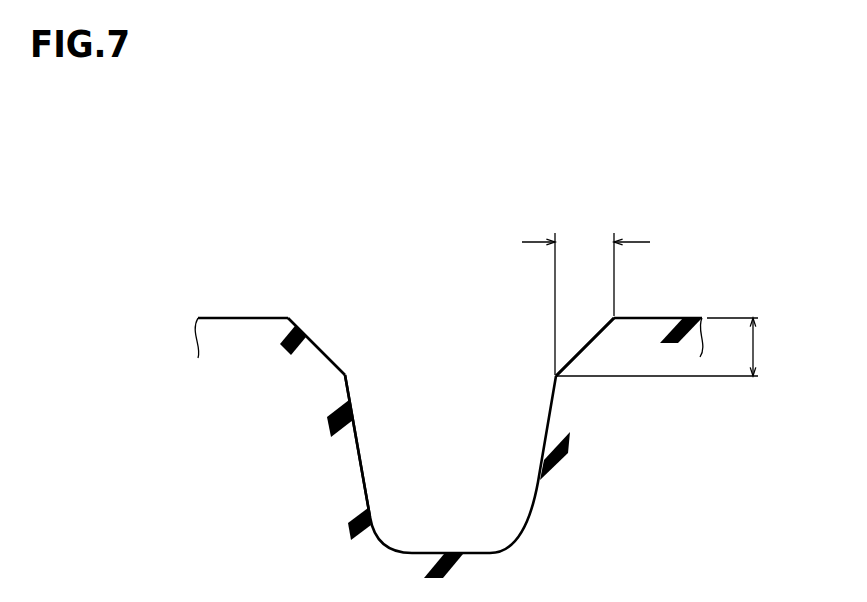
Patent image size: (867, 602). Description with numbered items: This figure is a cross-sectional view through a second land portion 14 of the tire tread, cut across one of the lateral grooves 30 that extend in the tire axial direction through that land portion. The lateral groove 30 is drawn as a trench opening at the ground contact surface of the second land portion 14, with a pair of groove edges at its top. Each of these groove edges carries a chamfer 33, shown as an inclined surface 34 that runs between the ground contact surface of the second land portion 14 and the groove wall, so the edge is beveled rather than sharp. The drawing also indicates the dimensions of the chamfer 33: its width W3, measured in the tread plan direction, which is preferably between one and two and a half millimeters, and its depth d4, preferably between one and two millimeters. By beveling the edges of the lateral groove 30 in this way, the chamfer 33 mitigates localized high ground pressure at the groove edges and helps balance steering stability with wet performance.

The second land portion 14 is at (232, 318).
The chamfer 33 is at (307, 335).
The inclined surface 34 is at (327, 355).
The lateral groove 30 is at (444, 390).
The width of the chamfer W3 is at (586, 290).
The depth of the chamfer d4 is at (676, 347).